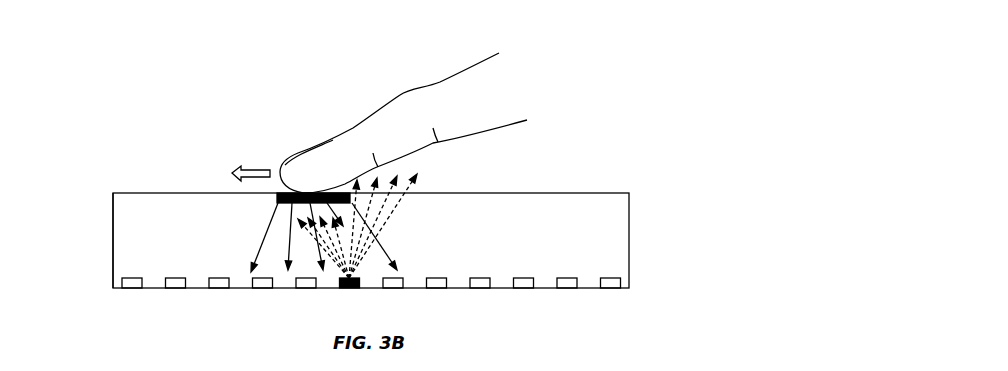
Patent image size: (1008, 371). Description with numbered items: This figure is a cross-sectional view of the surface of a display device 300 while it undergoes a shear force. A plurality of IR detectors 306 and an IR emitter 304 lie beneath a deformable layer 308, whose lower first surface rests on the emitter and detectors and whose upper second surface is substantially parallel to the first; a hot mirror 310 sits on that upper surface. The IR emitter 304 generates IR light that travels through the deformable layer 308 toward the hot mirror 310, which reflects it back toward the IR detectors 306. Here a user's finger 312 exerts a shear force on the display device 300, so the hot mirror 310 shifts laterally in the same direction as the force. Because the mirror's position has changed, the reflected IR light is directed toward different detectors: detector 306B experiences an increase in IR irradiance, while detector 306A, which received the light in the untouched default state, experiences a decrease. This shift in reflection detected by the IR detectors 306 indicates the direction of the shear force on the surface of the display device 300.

The display device 300 is at (624, 165).
The IR emitter 304 is at (347, 289).
The IR detectors 306 is at (567, 288).
The detector 306A is at (437, 288).
The detector 306B is at (263, 288).
The deformable layer 308 is at (96, 236).
The hot mirror 310 is at (270, 202).
The user's finger 312 is at (350, 128).